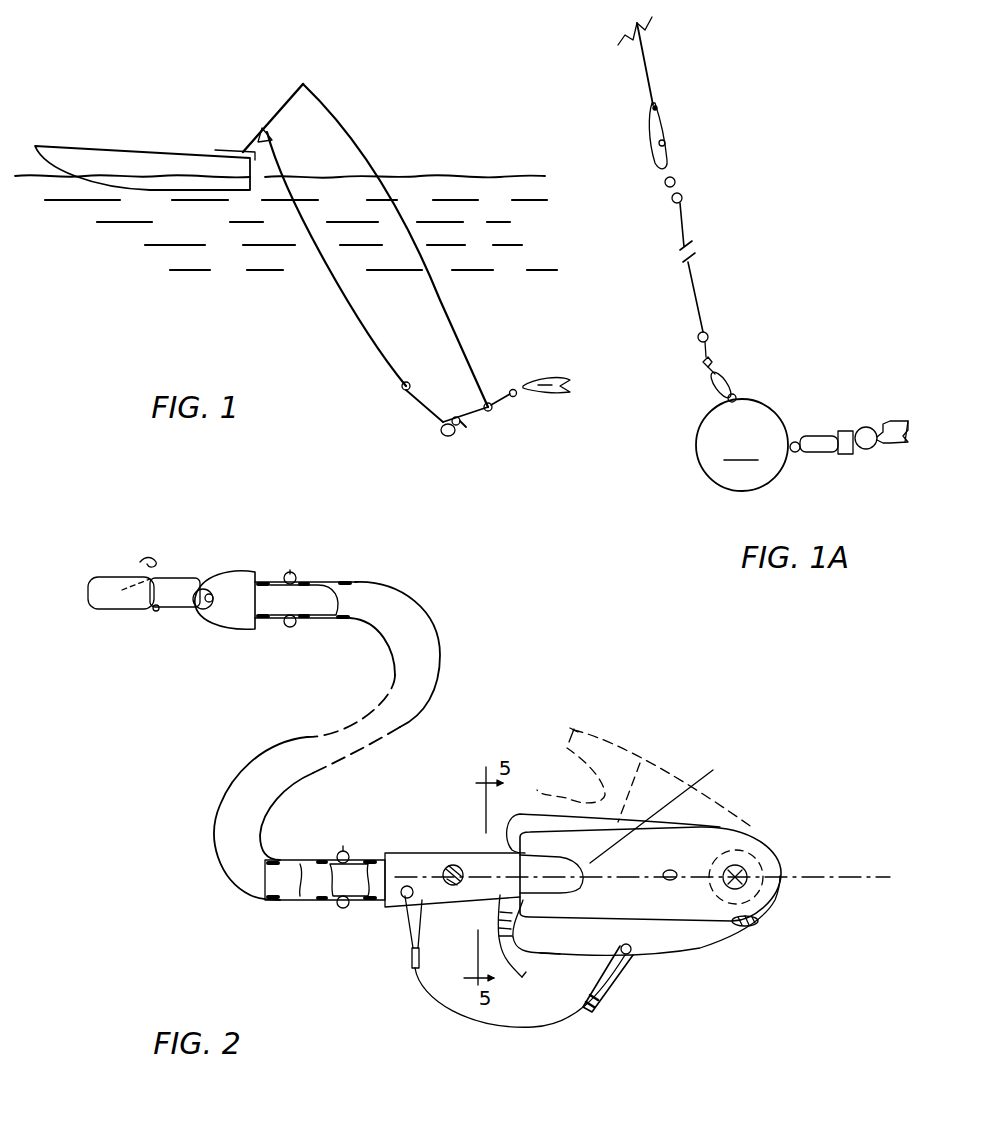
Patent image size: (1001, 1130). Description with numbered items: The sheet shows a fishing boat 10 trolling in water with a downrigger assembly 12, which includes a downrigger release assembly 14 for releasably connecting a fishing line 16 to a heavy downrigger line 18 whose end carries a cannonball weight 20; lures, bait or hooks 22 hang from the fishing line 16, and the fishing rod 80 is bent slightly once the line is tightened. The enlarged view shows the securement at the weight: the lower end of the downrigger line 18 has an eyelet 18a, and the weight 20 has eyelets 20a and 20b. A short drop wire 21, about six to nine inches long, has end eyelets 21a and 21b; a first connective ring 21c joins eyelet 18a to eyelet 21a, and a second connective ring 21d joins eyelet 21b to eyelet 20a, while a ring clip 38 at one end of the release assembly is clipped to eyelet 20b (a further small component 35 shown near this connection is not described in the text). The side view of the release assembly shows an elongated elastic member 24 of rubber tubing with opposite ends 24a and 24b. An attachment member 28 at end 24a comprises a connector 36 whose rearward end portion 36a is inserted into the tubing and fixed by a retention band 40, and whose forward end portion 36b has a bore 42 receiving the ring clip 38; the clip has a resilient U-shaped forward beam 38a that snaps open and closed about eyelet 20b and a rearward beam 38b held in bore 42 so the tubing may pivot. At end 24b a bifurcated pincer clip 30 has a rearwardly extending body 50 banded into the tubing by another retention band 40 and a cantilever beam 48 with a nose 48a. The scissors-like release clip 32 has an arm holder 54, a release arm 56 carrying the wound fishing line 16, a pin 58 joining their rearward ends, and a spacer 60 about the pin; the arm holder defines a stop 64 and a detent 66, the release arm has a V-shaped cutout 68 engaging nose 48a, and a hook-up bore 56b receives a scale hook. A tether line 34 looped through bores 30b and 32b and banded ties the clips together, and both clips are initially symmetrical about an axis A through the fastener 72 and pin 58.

In FIG. 1, the fishing boat 10 is at (108, 147).
In FIG. 1, the downrigger assembly 12 is at (398, 106).
In FIG. 1, the downrigger release assembly 14 is at (472, 422).
In FIG. 2, the downrigger release assembly 14 is at (545, 590).
In FIG. 1, the fishing line 16 is at (446, 300).
In FIG. 1, the downrigger line 18 is at (341, 300).
In FIG. 1A, the downrigger line 18 is at (649, 80).
In FIG. 1A, the eyelet 18a is at (672, 131).
In FIG. 1, the cannonball weight 20 is at (438, 435).
In FIG. 1A, the cannonball weight 20 is at (742, 445).
In FIG. 1A, the eyelet 20a is at (736, 395).
In FIG. 1A, the eyelet 20b is at (798, 442).
In FIG. 1, the drop wire 21 is at (423, 405).
In FIG. 1A, the drop wire 21 is at (698, 298).
In FIG. 1A, the eyelet 21a is at (675, 176).
In FIG. 1A, the eyelet 21b is at (710, 333).
In FIG. 1A, the first connective ring 21c is at (668, 154).
In FIG. 1A, the second connective ring 21d is at (728, 376).
In FIG. 1, the hooks 22 is at (513, 400).
In FIG. 1, the elastic member 24 is at (463, 428).
In FIG. 1A, the elastic member 24 is at (900, 445).
In FIG. 2, the elastic member 24 is at (327, 707).
In FIG. 2, the rearward end of elastic member 24a is at (346, 581).
In FIG. 2, the forward end of elastic member 24b is at (370, 858).
In FIG. 1A, the attachment member 28 is at (857, 449).
In FIG. 2, the attachment member 28 is at (192, 620).
In FIG. 2, the bifurcated pincer clip 30 is at (459, 887).
In FIG. 2, the bore 30b is at (410, 884).
In FIG. 1, the release clip 32 is at (492, 401).
In FIG. 2, the release clip 32 is at (636, 978).
In FIG. 2, the bore 32b is at (618, 953).
In FIG. 2, the tether line 34 is at (428, 994).
In FIG. 1A, the ball swivel 35 is at (868, 451).
In FIG. 2, the connector 36 is at (276, 592).
In FIG. 2, the rearward end portion 36a is at (308, 600).
In FIG. 2, the forward end portion 36b is at (245, 573).
In FIG. 1, the ring clip 38 is at (453, 417).
In FIG. 1A, the ring clip 38 is at (830, 428).
In FIG. 2, the ring clip 38 is at (148, 592).
In FIG. 2, the forward beam 38a is at (132, 575).
In FIG. 2, the rearward beam 38b is at (184, 577).
In FIG. 2, the retention band 40 is at (290, 628).
In FIG. 2, the bore 42 is at (213, 595).
In FIG. 2, the cantilever beam 48 is at (467, 892).
In FIG. 2, the nose 48a is at (522, 977).
In FIG. 2, the rearwardly extending body 50 is at (318, 880).
In FIG. 2, the arm holder 54 is at (722, 948).
In FIG. 2, the release arm 56 is at (666, 891).
In FIG. 2, the hook-up bore 56b is at (672, 868).
In FIG. 2, the pin 58 is at (750, 870).
In FIG. 2, the spacer 60 is at (760, 826).
In FIG. 2, the stop 64 is at (758, 920).
In FIG. 2, the detent 66 is at (680, 760).
In FIG. 2, the V-shaped cutout 68 is at (672, 805).
In FIG. 2, the fastener 72 is at (453, 865).
In FIG. 1, the fishing rod 80 is at (290, 108).
In FIG. 2, the axis A is at (815, 880).